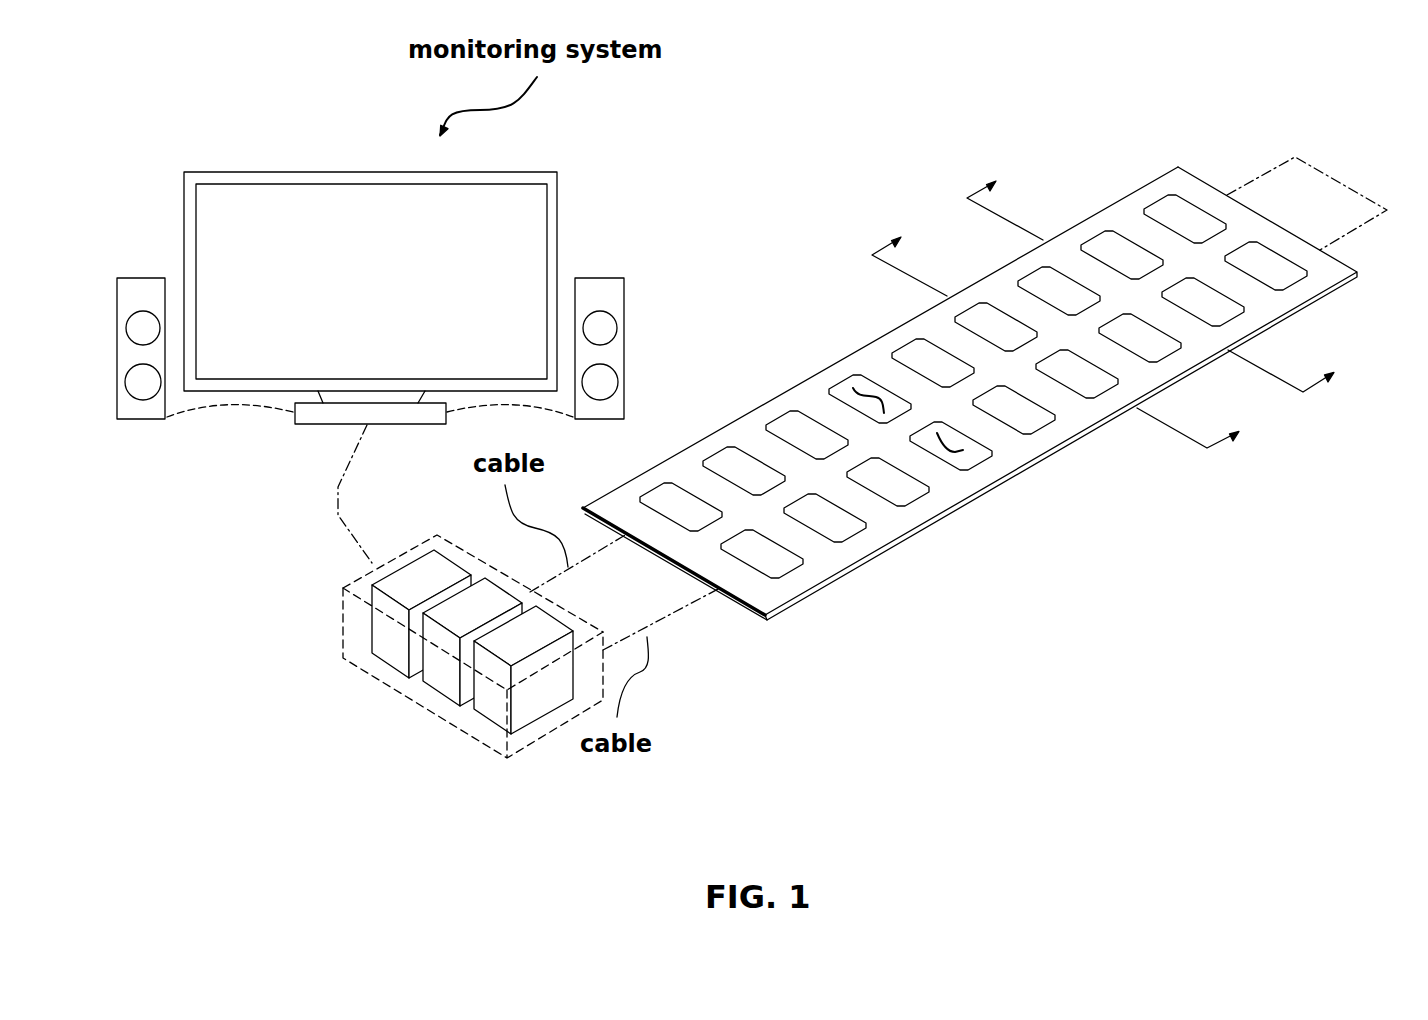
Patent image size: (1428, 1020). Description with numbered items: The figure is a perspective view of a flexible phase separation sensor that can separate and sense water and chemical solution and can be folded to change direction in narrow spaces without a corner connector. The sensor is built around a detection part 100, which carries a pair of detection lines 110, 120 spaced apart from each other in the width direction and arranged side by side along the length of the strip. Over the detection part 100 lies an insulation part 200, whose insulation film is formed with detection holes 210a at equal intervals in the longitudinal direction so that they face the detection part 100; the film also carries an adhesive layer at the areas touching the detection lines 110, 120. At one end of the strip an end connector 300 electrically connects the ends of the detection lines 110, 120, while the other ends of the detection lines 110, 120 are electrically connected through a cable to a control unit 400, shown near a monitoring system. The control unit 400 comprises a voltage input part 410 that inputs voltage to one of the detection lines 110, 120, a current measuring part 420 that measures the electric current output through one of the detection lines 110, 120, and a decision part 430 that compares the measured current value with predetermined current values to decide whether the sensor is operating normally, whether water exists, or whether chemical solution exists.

The detection part 100 is at (708, 666).
The detection line 110 is at (728, 595).
The detection line 120 is at (647, 546).
The insulation part 200 is at (970, 486).
The detection hole 210a is at (868, 390).
The end connector 300 is at (1282, 160).
The control unit 400 is at (343, 620).
The voltage input part 410 is at (492, 697).
The current measuring part 420 is at (438, 665).
The decision part 430 is at (393, 630).